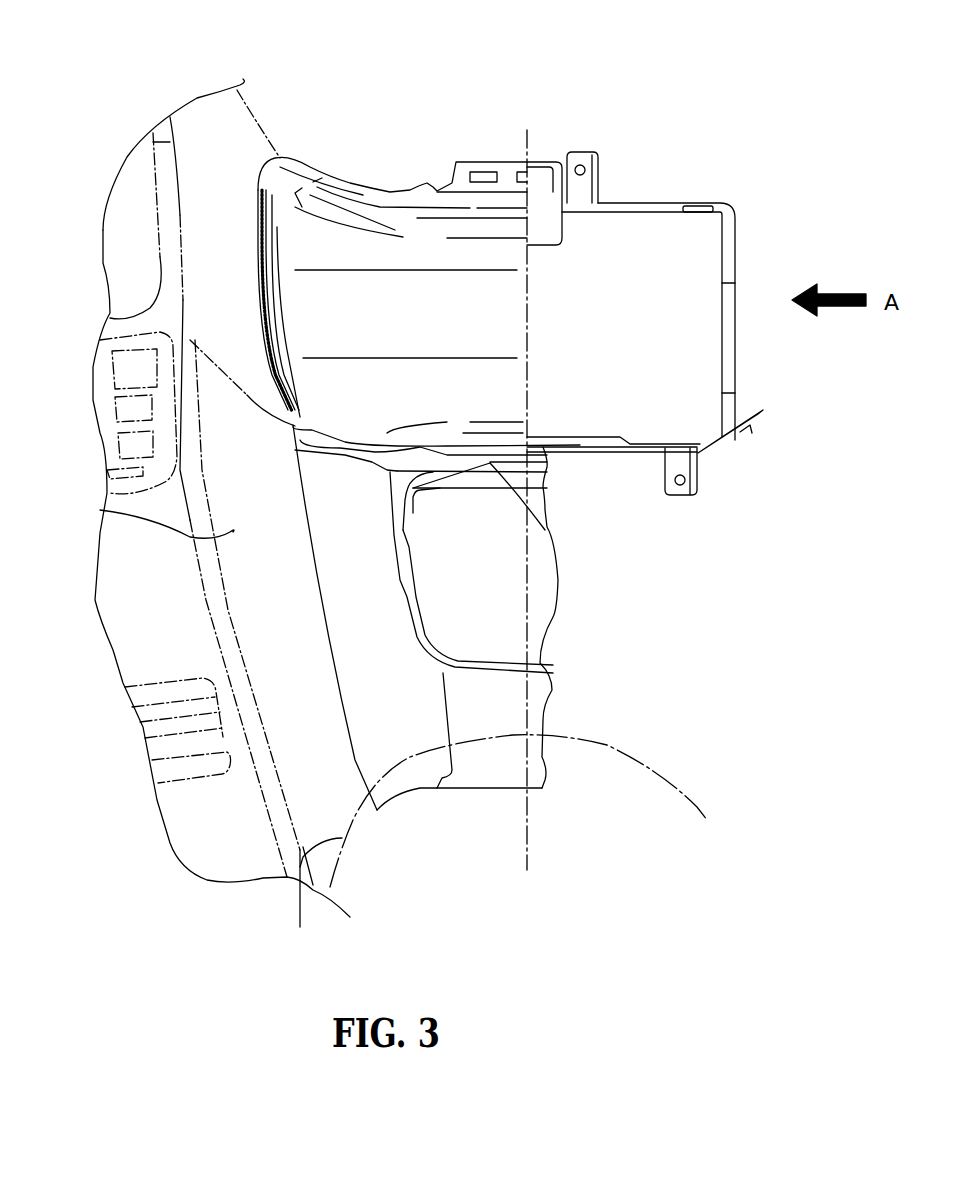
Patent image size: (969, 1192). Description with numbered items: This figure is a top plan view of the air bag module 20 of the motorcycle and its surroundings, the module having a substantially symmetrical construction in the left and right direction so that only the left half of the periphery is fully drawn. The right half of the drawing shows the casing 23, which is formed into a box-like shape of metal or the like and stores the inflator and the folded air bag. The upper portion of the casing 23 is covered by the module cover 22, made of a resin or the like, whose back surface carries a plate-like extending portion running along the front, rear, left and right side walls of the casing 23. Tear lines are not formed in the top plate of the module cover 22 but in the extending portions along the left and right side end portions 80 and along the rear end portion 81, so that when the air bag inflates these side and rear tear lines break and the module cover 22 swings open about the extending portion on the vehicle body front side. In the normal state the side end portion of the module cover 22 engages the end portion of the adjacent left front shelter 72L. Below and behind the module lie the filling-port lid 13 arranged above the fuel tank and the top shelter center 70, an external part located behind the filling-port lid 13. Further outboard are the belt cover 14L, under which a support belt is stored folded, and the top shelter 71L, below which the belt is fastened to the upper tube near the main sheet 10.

The main sheet 10 is at (300, 927).
The filling-port lid 13 is at (510, 578).
The belt cover 14L is at (337, 602).
The air bag module 20 is at (388, 172).
The module cover 22 is at (332, 197).
The casing 23 is at (727, 380).
The top shelter center 70 is at (540, 705).
The top shelter 71L is at (100, 510).
The left front shelter 72L is at (193, 113).
The side end portion 80 is at (250, 293).
The rear end portion 81 is at (492, 473).